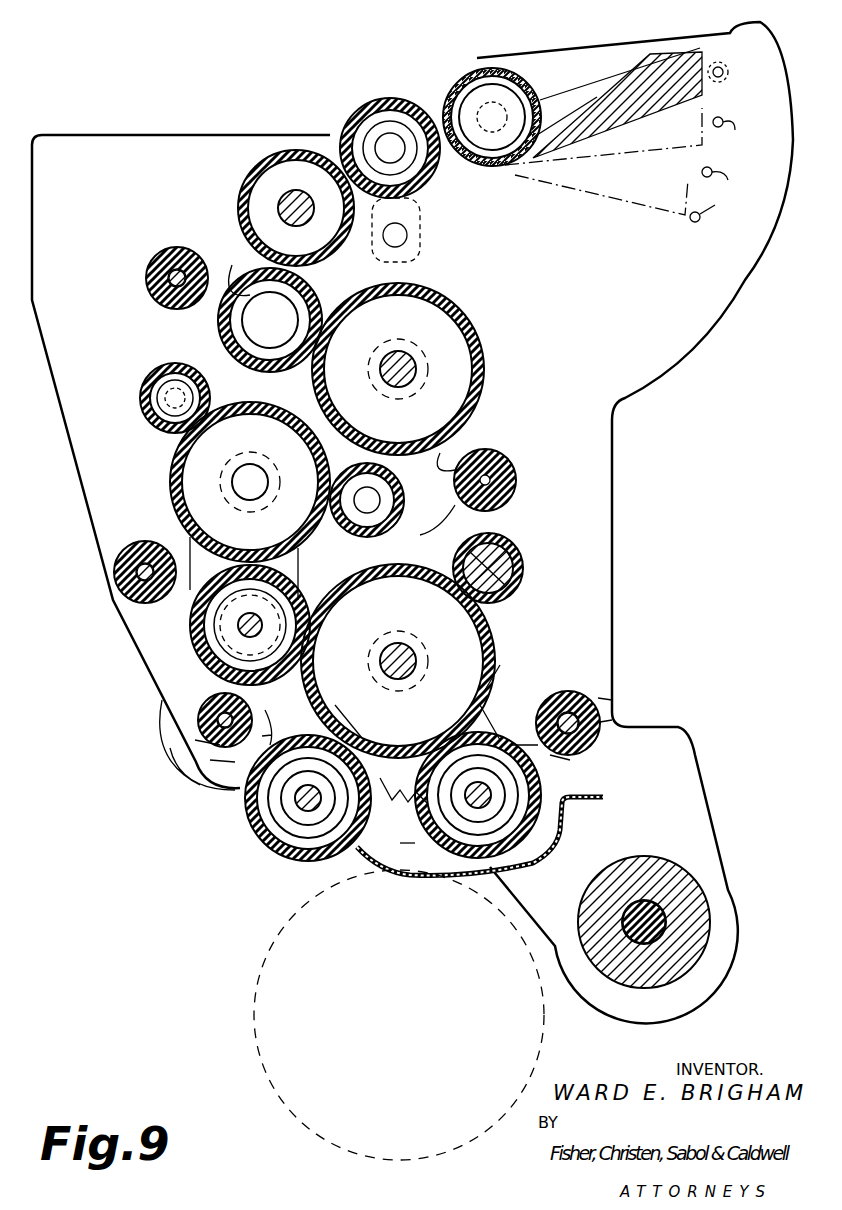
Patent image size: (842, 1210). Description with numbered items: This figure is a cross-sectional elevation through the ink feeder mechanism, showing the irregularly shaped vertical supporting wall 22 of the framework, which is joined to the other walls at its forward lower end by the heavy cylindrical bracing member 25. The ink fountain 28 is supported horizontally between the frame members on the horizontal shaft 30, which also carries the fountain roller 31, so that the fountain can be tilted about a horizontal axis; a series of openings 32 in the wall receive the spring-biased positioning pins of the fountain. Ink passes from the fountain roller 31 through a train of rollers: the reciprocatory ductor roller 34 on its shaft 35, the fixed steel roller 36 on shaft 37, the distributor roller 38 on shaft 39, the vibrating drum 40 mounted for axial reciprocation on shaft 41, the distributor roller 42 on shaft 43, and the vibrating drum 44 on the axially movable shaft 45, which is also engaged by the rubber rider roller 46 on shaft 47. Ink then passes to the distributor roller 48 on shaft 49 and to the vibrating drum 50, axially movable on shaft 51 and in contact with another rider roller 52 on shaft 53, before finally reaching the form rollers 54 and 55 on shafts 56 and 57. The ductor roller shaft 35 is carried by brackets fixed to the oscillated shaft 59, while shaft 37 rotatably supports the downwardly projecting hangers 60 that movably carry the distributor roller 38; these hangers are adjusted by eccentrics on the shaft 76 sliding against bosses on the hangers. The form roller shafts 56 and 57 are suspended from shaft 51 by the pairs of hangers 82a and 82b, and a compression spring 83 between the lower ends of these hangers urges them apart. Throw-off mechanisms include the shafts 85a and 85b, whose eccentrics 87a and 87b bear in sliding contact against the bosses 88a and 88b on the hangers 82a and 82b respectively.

The vertical supporting wall 22 is at (520, 247).
The cylindrical bracing member 25 is at (700, 910).
The ink fountain 28 is at (667, 72).
The horizontal shaft 30 is at (508, 118).
The fountain roller 31 is at (535, 95).
The openings 32 is at (625, 142).
The ductor roller 34 is at (390, 131).
The shaft 35 is at (390, 146).
The fixed steel roller 36 is at (296, 184).
The shaft 37 is at (303, 197).
The distributor roller 38 is at (285, 311).
The shaft 39 is at (300, 310).
The vibrating drum 40 is at (412, 376).
The shaft 41 is at (418, 365).
The distributor roller 42 is at (468, 499).
The shaft 43 is at (367, 505).
The vibrating drum 44 is at (221, 501).
The axially movable shaft 45 is at (232, 483).
The rubber rider roller 46 is at (144, 404).
The shaft 47 is at (142, 428).
The distributor roller 48 is at (214, 700).
The shaft 49 is at (208, 670).
The vibrating drum 50 is at (419, 661).
The shaft 51 is at (406, 660).
The rider roller 52 is at (506, 552).
The shaft 53 is at (500, 546).
The form roller 54 is at (284, 808).
The form roller 55 is at (536, 742).
The shaft 56 is at (300, 810).
The shaft 57 is at (472, 812).
The shaft 59 is at (410, 230).
The hangers 60 is at (238, 265).
The shaft 76 is at (148, 270).
The hangers 82a is at (342, 710).
The hangers 82b is at (485, 715).
The compression spring 83 is at (399, 1001).
The shaft 85a is at (212, 760).
The shaft 85b is at (604, 720).
The eccentrics 87a is at (195, 742).
The eccentrics 87b is at (600, 700).
The bosses 88a is at (281, 716).
The bosses 88b is at (565, 760).